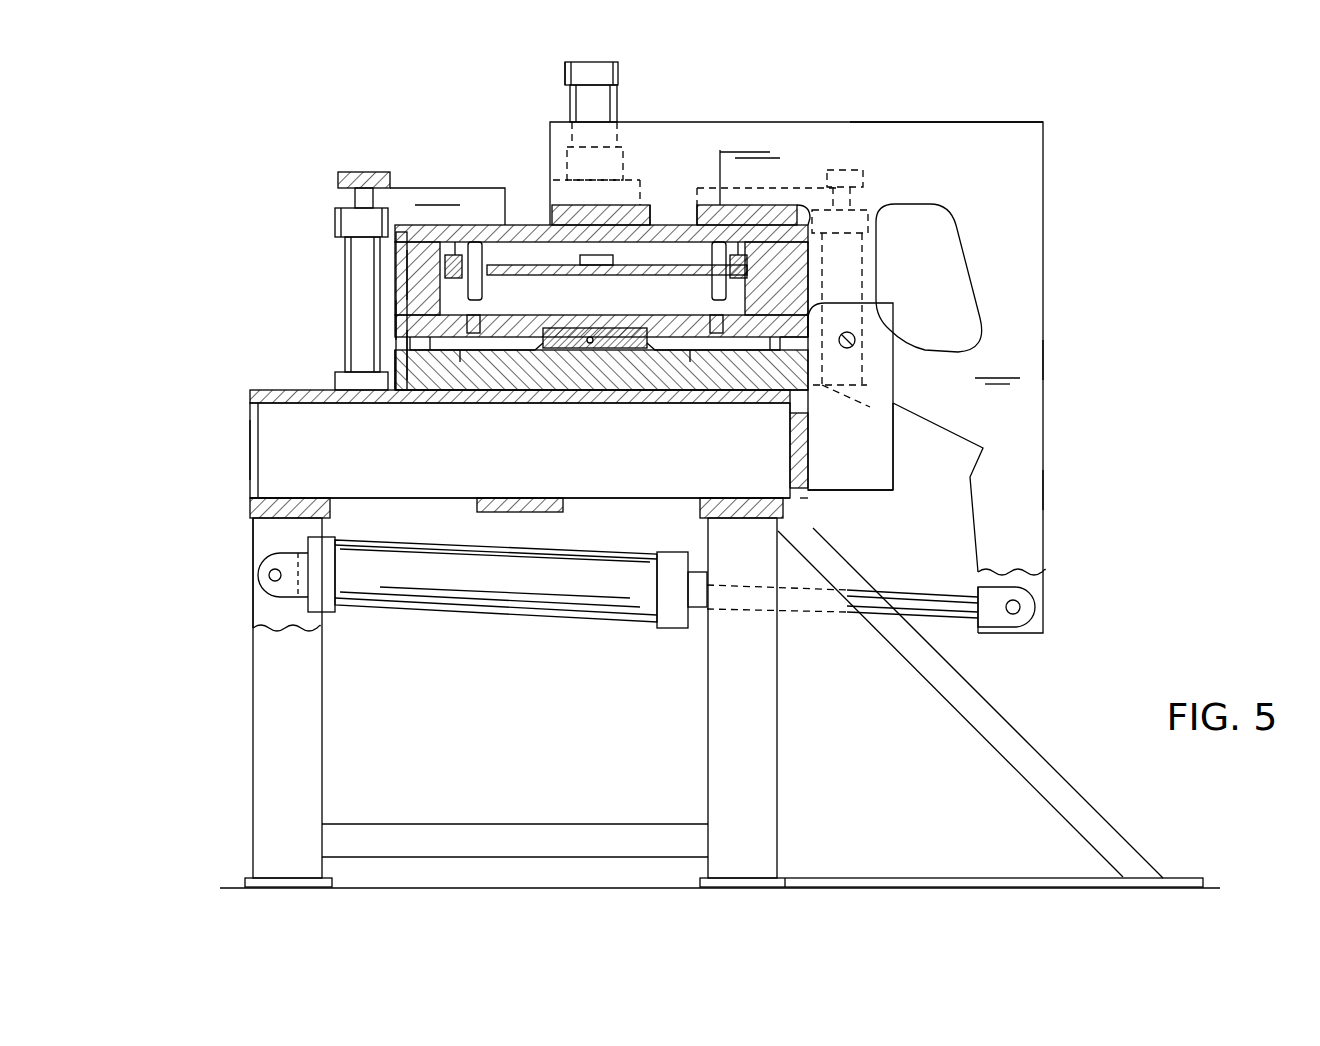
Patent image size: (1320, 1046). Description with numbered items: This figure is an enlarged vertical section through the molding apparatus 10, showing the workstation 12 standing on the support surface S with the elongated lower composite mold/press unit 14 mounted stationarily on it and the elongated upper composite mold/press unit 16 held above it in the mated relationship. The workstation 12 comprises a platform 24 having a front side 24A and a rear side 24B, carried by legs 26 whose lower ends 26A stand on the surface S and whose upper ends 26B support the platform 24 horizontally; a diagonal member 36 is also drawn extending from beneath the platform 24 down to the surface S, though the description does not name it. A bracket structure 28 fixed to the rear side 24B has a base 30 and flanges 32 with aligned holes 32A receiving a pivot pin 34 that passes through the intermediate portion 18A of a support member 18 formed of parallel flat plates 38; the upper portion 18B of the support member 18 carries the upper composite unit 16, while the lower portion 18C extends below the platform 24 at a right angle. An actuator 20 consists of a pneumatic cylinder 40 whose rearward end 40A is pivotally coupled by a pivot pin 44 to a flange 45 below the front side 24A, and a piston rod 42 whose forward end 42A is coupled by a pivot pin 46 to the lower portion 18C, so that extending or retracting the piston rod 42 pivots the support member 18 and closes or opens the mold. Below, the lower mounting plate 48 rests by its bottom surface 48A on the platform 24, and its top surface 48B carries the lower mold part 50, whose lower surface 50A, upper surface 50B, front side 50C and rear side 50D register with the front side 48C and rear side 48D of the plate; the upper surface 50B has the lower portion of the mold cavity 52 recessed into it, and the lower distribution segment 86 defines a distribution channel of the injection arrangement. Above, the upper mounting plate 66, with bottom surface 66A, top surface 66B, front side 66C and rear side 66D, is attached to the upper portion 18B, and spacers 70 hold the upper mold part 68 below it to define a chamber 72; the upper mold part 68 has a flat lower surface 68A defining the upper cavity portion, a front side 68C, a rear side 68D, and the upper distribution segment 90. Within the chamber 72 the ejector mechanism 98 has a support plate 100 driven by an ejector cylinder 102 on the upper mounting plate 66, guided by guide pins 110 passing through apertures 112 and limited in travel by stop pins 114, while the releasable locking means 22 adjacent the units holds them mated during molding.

The molding apparatus 10 is at (295, 140).
The workstation 12 is at (245, 487).
The lower composite mold/press unit 14 is at (393, 360).
The upper composite mold/press unit 16 is at (398, 295).
The support member 18 is at (1048, 425).
The intermediate portion 18A is at (930, 372).
The upper portion 18B is at (906, 142).
The lower portion 18C is at (1035, 491).
The actuator 20 is at (470, 615).
The releasable locking means 22 is at (848, 165).
The platform 24 is at (262, 428).
The front side of the platform 24A is at (250, 452).
The rear side of the platform 24B is at (812, 492).
The leg 26 is at (253, 778).
The lower end of the leg 26A is at (298, 885).
The upper end of the leg 26B is at (345, 508).
The bracket structure 28 is at (790, 445).
The base 30 is at (790, 475).
The flange 32 is at (895, 457).
The aligned hole 32A is at (885, 430).
The pivot pin 34 is at (860, 338).
The diagonal brace 36 is at (1085, 790).
The flat plate 38 is at (1000, 575).
The pneumatic cylinder 40 is at (600, 628).
The rearward end of the cylinder 40A is at (285, 603).
The piston rod 42 is at (797, 612).
The forward end of the piston rod 42A is at (1000, 618).
The pivot pin 44 is at (270, 572).
The flange 45 is at (262, 545).
The pivot pin 46 is at (1020, 606).
The lower mounting plate 48 is at (520, 390).
The bottom surface of the lower mounting plate 48A is at (601, 410).
The top surface of the lower mounting plate 48B is at (447, 392).
The front side of the lower mounting plate 48C is at (395, 392).
The rear side of the lower mounting plate 48D is at (848, 420).
The lower mold part 50 is at (720, 370).
The lower surface of the lower mold part 50A is at (433, 380).
The upper surface of the lower mold part 50B is at (398, 283).
The front side of the lower mold part 50C is at (400, 360).
The rear side of the lower mold part 50D is at (762, 372).
The mold cavity 52 is at (462, 362).
The upper mounting plate 66 is at (455, 240).
The bottom surface of the upper mounting plate 66A is at (782, 240).
The top surface of the upper mounting plate 66B is at (690, 235).
The front side of the upper mounting plate 66C is at (405, 240).
The rear side of the upper mounting plate 66D is at (808, 250).
The upper mold part 68 is at (622, 318).
The lower surface of the upper mold part 68A is at (790, 340).
The front side of the upper mold part 68C is at (405, 322).
The rear side of the upper mold part 68D is at (820, 320).
The spacer 70 is at (420, 235).
The chamber 72 is at (548, 222).
The lower liquid molding material distribution segment 86 is at (570, 348).
The upper liquid molding material distribution segment 90 is at (610, 350).
The ejector mechanism 98 is at (622, 63).
The support plate 100 is at (540, 230).
The ejector cylinder 102 is at (565, 72).
The guide pin 110 is at (490, 292).
The aperture 112 is at (470, 250).
The stop pin 114 is at (500, 238).
The support surface S is at (235, 882).